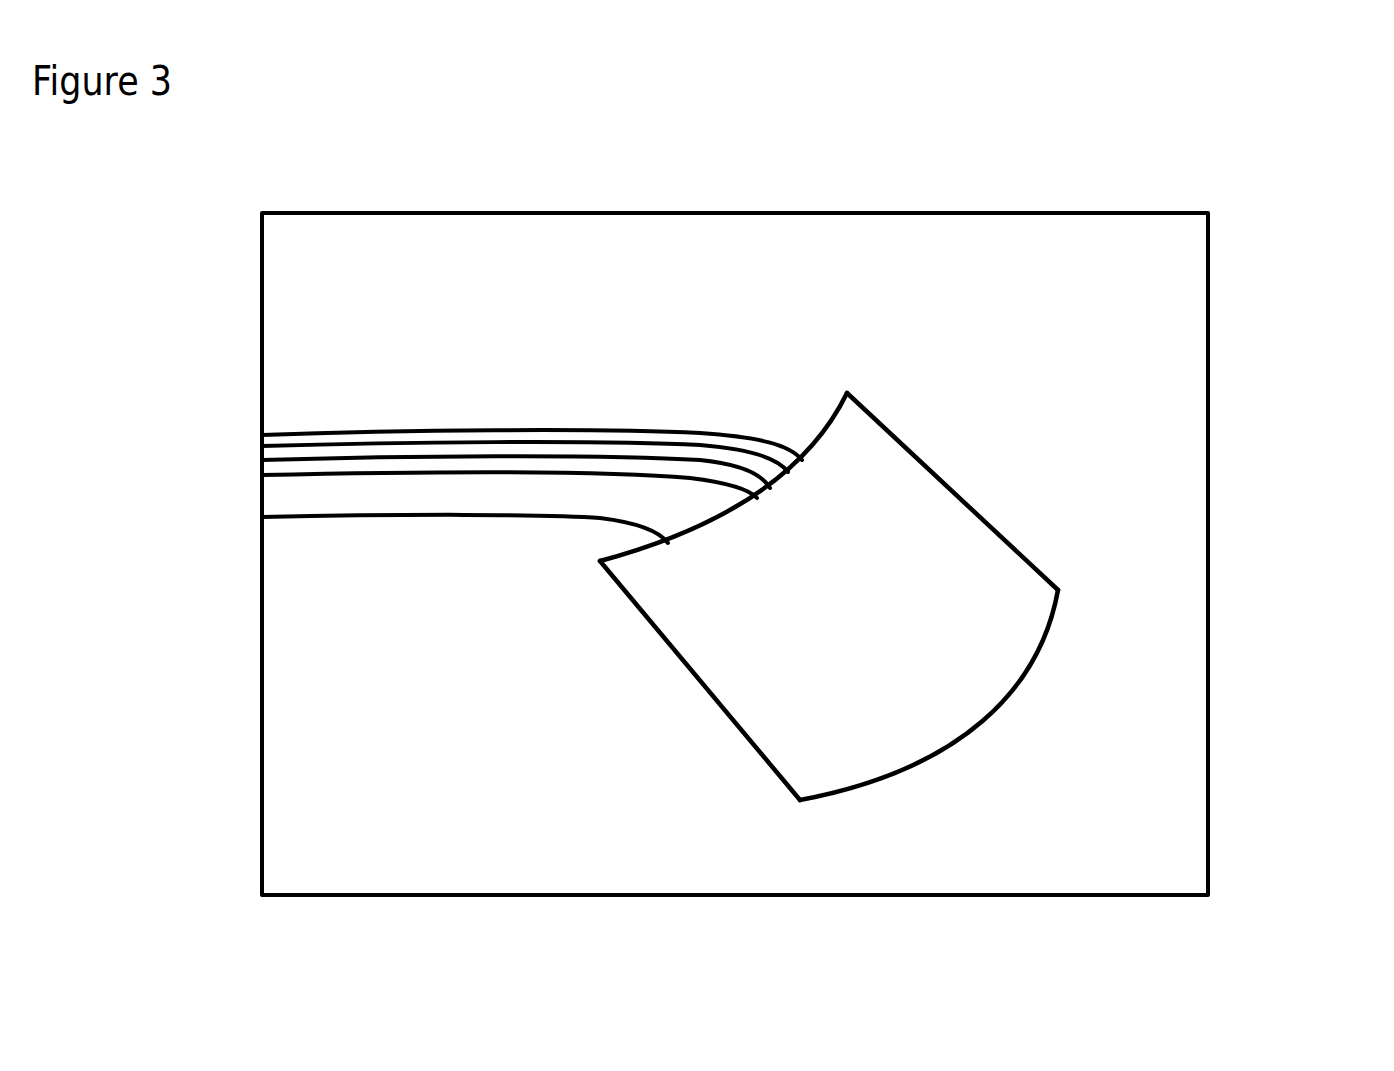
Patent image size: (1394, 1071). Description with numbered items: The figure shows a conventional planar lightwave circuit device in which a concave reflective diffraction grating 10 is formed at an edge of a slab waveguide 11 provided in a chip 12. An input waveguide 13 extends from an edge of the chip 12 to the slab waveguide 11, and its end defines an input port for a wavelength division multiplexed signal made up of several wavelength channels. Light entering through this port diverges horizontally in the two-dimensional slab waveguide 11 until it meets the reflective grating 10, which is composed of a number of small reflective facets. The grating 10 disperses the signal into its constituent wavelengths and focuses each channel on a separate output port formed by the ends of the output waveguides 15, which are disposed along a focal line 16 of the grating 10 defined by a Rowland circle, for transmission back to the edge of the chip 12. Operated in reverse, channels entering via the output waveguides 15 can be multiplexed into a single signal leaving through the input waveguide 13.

The concave reflective diffraction grating 10 is at (1013, 693).
The slab waveguide 11 is at (905, 490).
The chip 12 is at (499, 768).
The input waveguide 13 is at (297, 522).
The output waveguide 15 is at (693, 478).
The focal line 16 is at (827, 413).